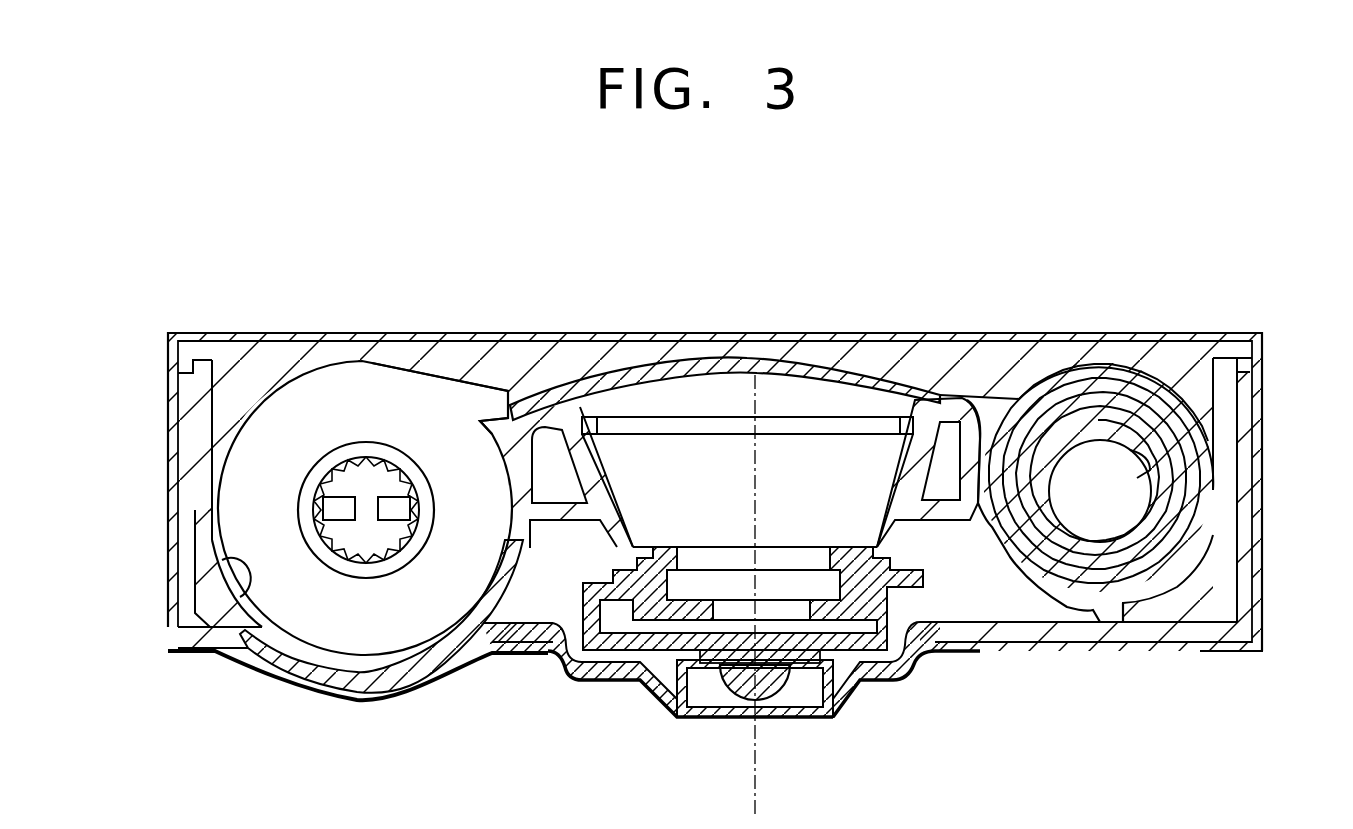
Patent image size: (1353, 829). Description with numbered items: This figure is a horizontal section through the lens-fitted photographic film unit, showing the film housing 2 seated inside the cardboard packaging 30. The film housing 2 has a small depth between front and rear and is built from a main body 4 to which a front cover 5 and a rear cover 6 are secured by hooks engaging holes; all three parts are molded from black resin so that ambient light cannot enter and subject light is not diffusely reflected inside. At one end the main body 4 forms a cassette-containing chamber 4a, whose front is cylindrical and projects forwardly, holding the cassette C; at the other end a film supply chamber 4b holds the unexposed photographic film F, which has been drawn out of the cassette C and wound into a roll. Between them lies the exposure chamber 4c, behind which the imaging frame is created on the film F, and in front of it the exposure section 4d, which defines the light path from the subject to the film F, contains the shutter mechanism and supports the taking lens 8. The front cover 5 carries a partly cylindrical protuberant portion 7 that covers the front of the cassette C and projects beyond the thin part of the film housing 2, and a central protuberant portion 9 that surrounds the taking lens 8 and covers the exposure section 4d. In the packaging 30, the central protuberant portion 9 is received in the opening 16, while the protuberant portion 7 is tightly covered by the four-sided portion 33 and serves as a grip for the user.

The film housing 2 is at (120, 347).
The cardboard packaging 30 is at (257, 335).
The cassette C is at (360, 392).
The rear cover 6 is at (612, 372).
The photographic film F is at (1102, 368).
The main body 4 is at (150, 452).
The cassette-containing chamber 4a is at (235, 612).
The film supply chamber 4b is at (1143, 557).
The exposure chamber 4c is at (880, 505).
The exposure section 4d is at (850, 655).
The front cover 5 is at (1247, 460).
The protuberant portion 7 is at (392, 682).
The taking lens 8 is at (752, 697).
The central protuberant portion 9 is at (600, 674).
The opening 16 is at (933, 655).
The four-sided portion 33 is at (318, 692).